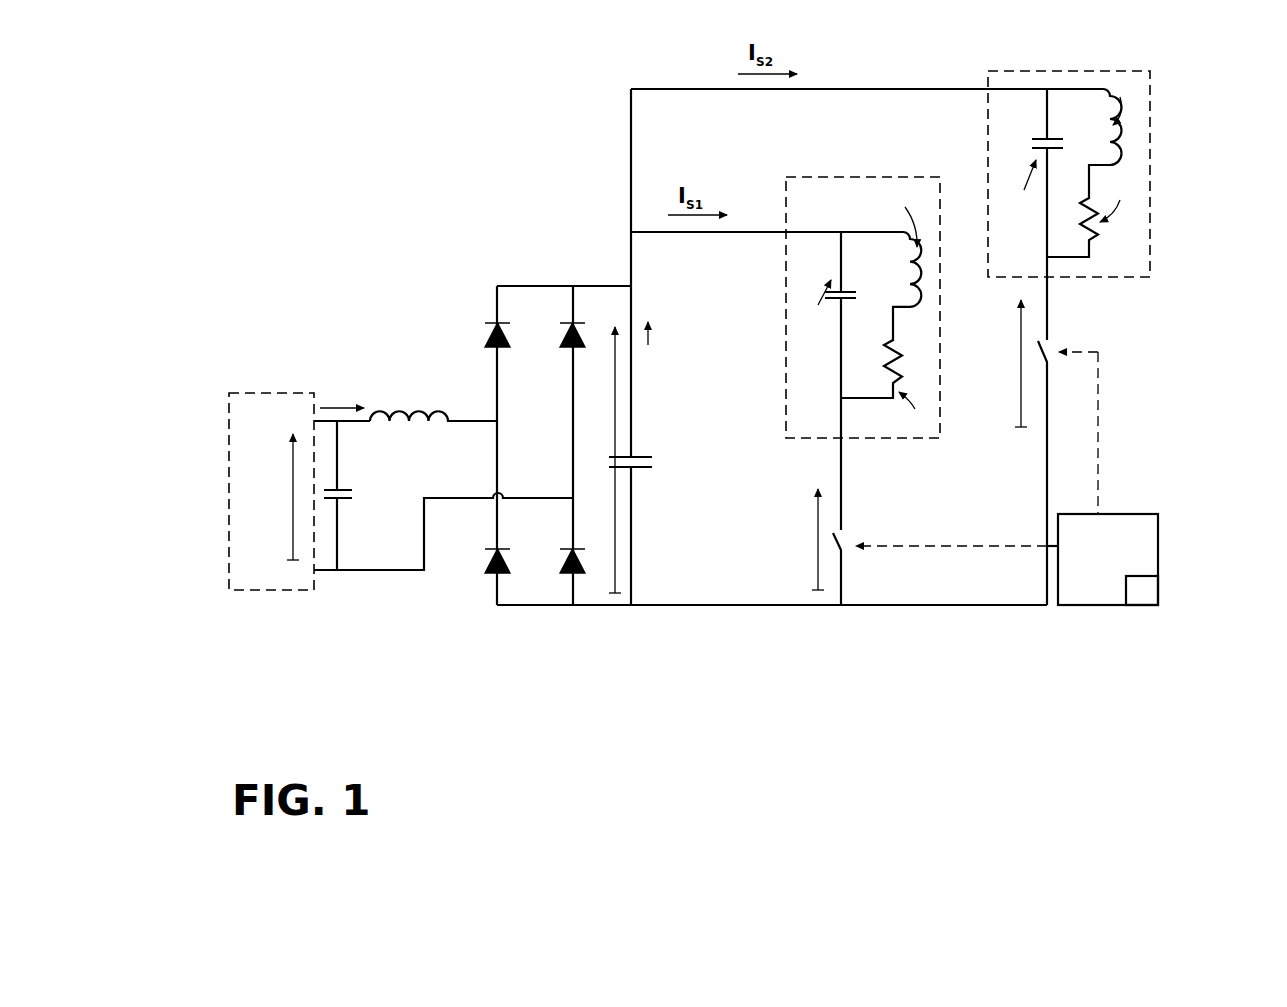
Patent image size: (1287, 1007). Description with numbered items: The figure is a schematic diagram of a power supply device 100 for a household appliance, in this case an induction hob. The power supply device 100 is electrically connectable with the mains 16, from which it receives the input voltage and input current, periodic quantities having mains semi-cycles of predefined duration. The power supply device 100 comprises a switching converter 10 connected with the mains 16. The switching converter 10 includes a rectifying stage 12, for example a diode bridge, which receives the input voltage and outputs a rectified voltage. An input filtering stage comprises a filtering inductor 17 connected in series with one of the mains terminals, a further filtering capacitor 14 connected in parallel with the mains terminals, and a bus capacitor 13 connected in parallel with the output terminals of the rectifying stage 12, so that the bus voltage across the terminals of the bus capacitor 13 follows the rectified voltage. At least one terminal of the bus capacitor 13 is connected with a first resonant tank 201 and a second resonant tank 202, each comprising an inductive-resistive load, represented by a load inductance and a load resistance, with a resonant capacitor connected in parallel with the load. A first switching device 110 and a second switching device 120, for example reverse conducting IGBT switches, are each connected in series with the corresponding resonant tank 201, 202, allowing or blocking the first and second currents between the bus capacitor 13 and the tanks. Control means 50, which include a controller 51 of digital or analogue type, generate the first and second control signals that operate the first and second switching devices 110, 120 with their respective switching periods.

The switching converter 10 is at (705, 641).
The power supply device 100 is at (426, 198).
The mains 16 is at (221, 425).
The filtering inductor 17 is at (414, 394).
The filtering capacitor 14 is at (346, 502).
The rectifying stage 12 is at (535, 283).
The bus capacitor 13 is at (652, 472).
The first resonant tank 201 is at (947, 406).
The second resonant tank 202 is at (1156, 135).
The first switching device 110 is at (851, 526).
The second switching device 120 is at (1062, 340).
The control means 50 is at (1108, 566).
The controller 51 is at (1146, 590).